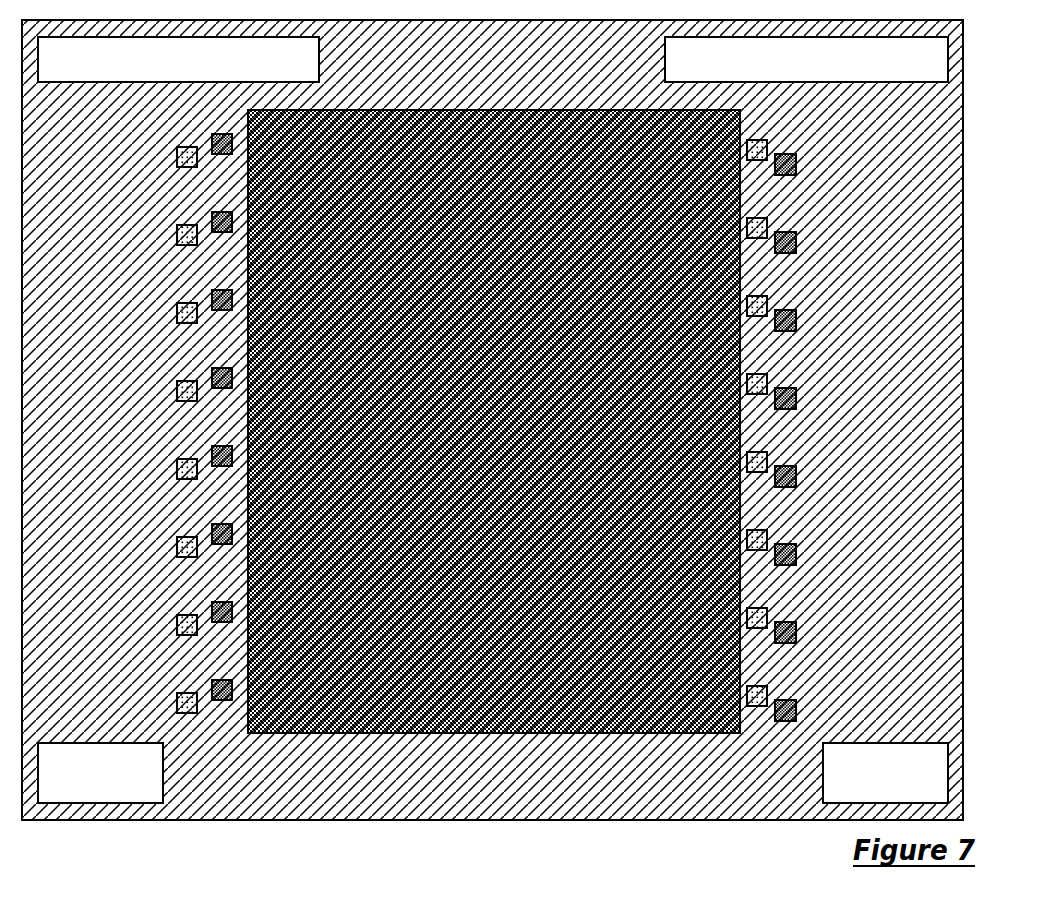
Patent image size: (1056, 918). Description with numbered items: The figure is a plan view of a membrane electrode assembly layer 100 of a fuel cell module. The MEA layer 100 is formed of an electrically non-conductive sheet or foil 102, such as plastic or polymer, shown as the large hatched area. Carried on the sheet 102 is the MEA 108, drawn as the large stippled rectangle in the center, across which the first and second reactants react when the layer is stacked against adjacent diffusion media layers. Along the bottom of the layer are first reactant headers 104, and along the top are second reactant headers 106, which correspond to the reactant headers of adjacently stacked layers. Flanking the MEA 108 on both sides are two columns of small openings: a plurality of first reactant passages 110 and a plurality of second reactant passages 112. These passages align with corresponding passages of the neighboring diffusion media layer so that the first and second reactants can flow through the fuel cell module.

The membrane electrode assembly (MEA) layer 100 is at (975, 115).
The electrically non-conductive sheet or foil 102 is at (944, 205).
The first reactant headers 104 is at (117, 782).
The top contact regions 106 is at (66, 68).
The MEA 108 is at (508, 158).
The first reactant passages 110 is at (233, 217).
The second reactant passages 112 is at (183, 231).